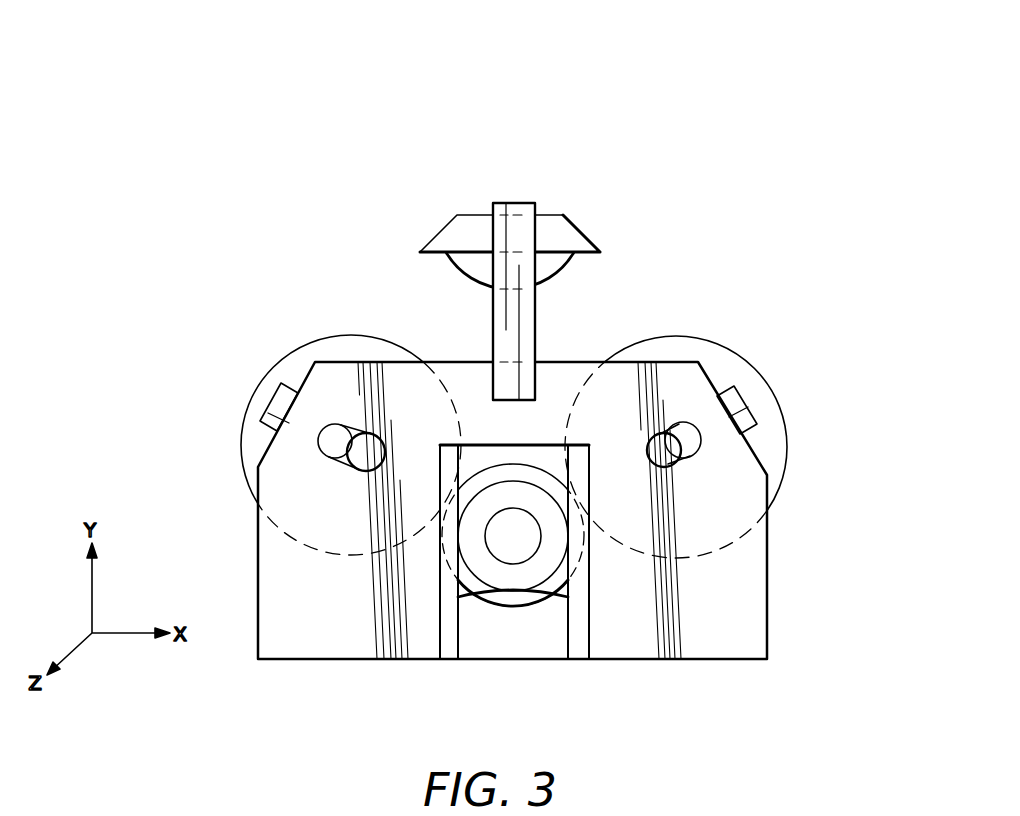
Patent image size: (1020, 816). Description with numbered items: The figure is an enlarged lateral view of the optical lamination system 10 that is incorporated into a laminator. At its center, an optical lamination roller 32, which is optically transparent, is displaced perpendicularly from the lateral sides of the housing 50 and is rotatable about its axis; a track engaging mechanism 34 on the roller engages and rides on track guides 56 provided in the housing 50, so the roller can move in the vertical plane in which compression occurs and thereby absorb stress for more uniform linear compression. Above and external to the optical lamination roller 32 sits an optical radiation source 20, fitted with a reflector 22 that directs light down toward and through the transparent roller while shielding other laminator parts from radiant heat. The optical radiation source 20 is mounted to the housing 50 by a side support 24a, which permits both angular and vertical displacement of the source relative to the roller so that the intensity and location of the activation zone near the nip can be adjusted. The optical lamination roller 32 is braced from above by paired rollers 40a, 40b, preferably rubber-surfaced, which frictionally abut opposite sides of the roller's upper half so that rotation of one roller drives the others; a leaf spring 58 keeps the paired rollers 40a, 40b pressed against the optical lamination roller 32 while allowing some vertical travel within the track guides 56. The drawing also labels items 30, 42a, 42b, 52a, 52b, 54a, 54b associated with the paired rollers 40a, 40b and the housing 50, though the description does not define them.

The optical lamination system 10 is at (700, 116).
The optical radiation source 20 is at (461, 273).
The reflector 22 is at (443, 246).
The side support 24a is at (535, 328).
The bearing housing ring 30 is at (530, 462).
The optical lamination roller 32 is at (557, 583).
The track engaging mechanism 34 is at (475, 544).
The paired roller 40a is at (731, 354).
The paired roller 40b is at (250, 420).
The right roller 42a is at (672, 460).
The left roller 42b is at (347, 465).
The housing 50 is at (769, 595).
The right roller pin 52a is at (690, 450).
The left roller pin 52b is at (318, 446).
The right stop block 54a is at (752, 406).
The left stop block 54b is at (273, 401).
The track guides 56 is at (578, 633).
The leaf spring 58 is at (498, 604).